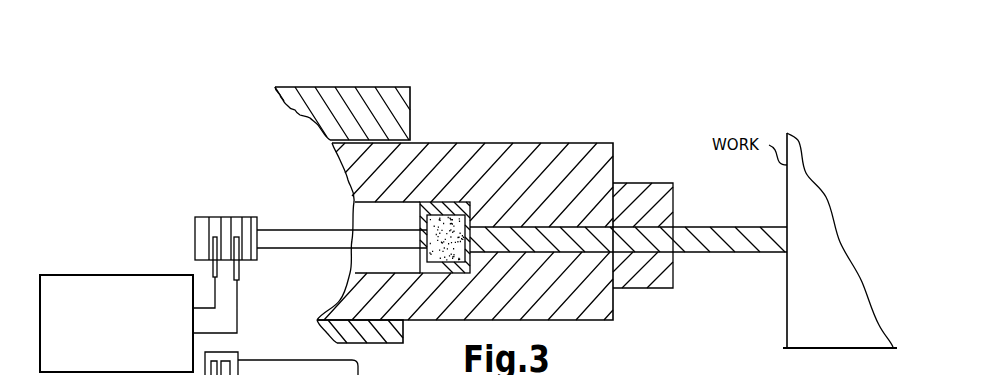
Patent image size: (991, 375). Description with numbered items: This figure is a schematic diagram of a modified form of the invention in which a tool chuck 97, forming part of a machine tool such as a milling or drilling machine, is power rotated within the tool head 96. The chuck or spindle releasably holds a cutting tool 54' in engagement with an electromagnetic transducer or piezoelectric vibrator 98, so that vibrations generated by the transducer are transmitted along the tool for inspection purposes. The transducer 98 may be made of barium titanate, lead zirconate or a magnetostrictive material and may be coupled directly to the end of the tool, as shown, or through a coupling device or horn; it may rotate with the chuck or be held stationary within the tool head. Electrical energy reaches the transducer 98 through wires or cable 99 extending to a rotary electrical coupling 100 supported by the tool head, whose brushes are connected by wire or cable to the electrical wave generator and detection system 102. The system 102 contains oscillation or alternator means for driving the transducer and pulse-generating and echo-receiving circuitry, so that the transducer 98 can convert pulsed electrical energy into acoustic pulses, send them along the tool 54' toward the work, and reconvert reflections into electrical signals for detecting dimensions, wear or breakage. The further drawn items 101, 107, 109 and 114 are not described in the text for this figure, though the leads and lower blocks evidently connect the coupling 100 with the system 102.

The tool head 96 is at (284, 87).
The electromagnetic transducer or piezoelectric vibrator 98 is at (447, 202).
The wires or cable 99 is at (313, 229).
The rotary electrical coupling 100 is at (208, 216).
The electrical leads 101 is at (237, 301).
The electrical wave generator and detection system 102 is at (145, 276).
The tool chuck 97 is at (640, 288).
The cutting tool 54' is at (628, 221).
The lower unit box 109 is at (326, 361).
The lower element 107 is at (398, 370).
The lower element 114 is at (664, 366).